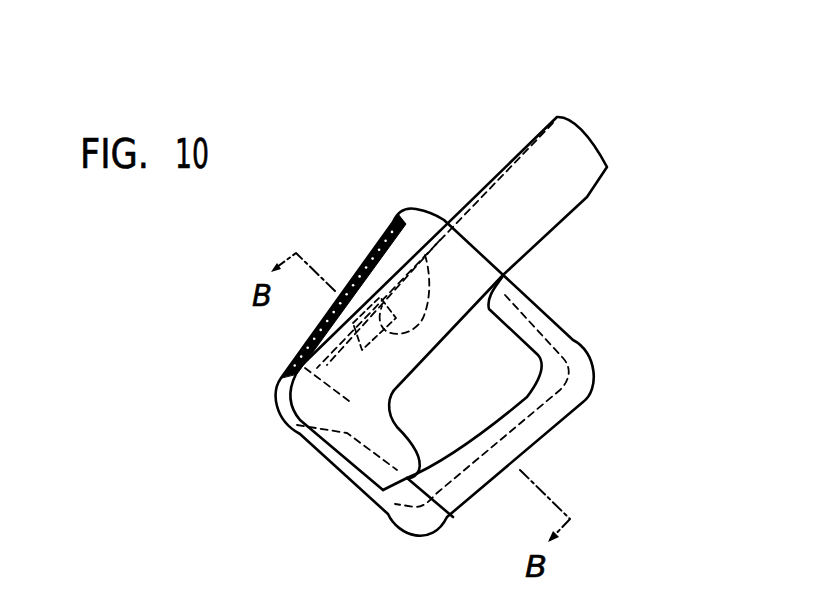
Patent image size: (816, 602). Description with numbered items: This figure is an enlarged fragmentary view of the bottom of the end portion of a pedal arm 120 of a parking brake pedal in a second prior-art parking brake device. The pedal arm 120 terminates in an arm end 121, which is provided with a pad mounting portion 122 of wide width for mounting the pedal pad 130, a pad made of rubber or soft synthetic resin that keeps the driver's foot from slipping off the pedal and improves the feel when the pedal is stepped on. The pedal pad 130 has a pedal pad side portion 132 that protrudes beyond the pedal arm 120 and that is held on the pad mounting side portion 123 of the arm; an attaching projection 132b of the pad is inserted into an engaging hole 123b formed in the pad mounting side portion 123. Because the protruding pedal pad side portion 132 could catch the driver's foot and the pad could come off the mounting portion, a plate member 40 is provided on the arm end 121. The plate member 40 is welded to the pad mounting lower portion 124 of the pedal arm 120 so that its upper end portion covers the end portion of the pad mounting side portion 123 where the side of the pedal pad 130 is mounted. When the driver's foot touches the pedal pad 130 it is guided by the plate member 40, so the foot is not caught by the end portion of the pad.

The plate member 40 is at (428, 362).
The pedal arm 120 is at (587, 197).
The arm end 121 is at (303, 437).
The pad mounting portion 122 is at (519, 390).
The pad mounting side portion 123 is at (394, 247).
The engaging hole 123b is at (425, 255).
The pad mounting lower portion 124 is at (297, 425).
The pedal pad 130 is at (608, 377).
The pedal pad side portion 132 is at (388, 256).
The attaching projection 132b is at (345, 330).